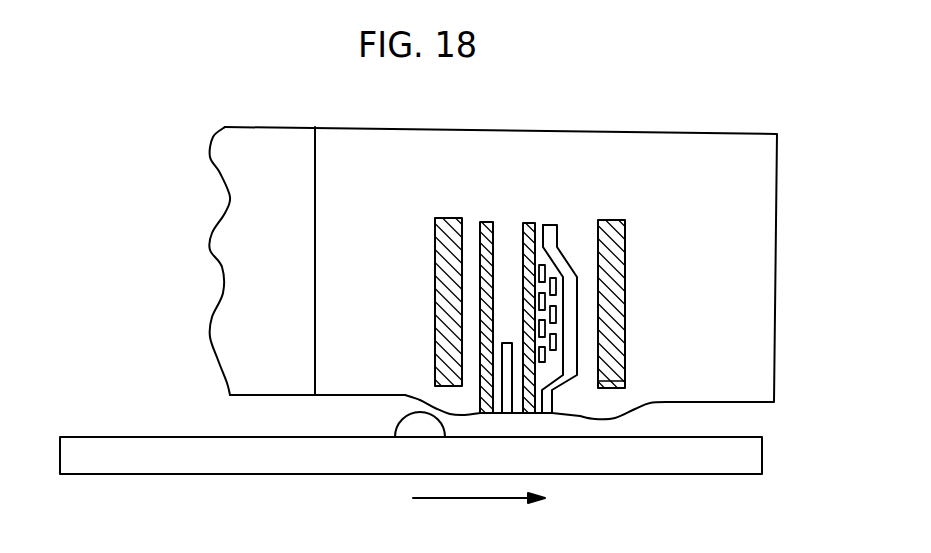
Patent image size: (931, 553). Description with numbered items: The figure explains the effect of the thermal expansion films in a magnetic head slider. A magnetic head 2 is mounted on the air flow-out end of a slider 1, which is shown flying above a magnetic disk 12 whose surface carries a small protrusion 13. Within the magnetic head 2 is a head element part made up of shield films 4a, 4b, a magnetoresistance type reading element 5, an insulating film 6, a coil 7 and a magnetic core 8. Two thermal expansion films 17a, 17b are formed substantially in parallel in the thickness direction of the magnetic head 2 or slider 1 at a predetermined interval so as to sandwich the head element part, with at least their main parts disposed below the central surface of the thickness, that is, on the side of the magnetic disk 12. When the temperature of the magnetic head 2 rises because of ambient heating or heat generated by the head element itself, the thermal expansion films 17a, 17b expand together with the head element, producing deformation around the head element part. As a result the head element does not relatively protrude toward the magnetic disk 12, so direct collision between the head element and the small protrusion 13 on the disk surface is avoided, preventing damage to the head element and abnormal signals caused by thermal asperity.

The slider 1 is at (252, 160).
The magnetic head 2 is at (360, 165).
The shield film 4a is at (485, 232).
The shield film 4b is at (527, 232).
The magnetoresistance type reading element 5 is at (505, 370).
The insulating film 6 is at (612, 379).
The coil 7 is at (540, 265).
The magnetic core 8 is at (563, 262).
The magnetic disk 12 is at (305, 465).
The small protrusion 13 is at (418, 440).
The thermal expansion film 17a is at (447, 277).
The thermal expansion film 17b is at (613, 278).